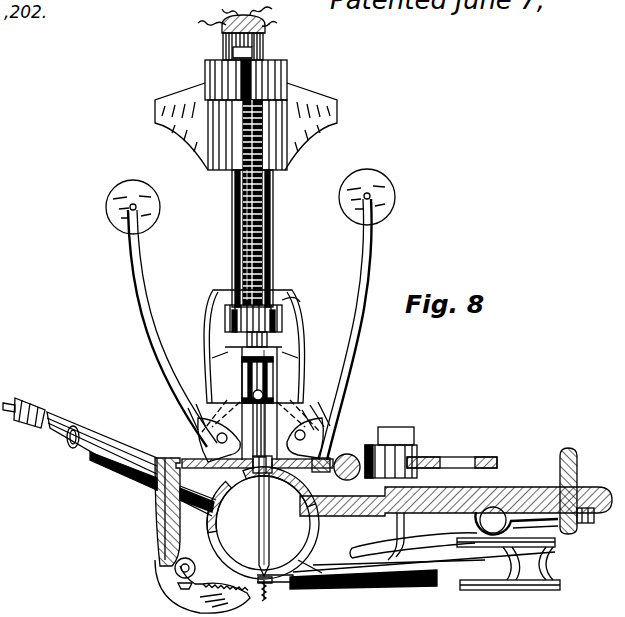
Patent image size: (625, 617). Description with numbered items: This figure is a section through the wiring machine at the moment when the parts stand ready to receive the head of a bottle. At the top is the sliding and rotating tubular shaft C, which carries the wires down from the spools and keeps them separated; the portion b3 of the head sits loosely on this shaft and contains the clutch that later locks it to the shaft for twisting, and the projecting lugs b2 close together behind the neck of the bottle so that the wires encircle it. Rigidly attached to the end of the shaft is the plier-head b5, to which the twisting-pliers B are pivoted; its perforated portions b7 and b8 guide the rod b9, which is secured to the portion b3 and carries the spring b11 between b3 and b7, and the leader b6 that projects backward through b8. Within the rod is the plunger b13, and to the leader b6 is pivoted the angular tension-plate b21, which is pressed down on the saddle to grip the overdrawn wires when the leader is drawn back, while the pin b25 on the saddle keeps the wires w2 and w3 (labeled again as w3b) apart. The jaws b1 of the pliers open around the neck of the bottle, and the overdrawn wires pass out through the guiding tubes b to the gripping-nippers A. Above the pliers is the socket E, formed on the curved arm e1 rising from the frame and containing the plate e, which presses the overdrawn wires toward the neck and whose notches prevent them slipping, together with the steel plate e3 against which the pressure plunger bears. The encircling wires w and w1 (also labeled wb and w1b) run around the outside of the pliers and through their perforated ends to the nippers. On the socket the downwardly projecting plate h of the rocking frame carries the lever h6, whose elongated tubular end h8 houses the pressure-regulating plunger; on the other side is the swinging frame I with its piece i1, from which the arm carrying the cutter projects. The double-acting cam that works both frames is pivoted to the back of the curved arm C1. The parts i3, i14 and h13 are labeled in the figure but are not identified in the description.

The encircling wire w is at (228, 16).
The overdrawn wire w3 is at (224, 7).
The encircling wire w1 is at (272, 25).
The tubular shaft C is at (265, 40).
The portion of the head b3 is at (232, 79).
The projecting lugs b2 is at (155, 104).
The spring b11 is at (232, 195).
The rod b9 is at (273, 222).
The curved arm C1 is at (236, 249).
The twisting-pliers B is at (360, 394).
The plier-head b5 is at (261, 375).
The perforated portion b7 is at (213, 318).
The perforated portion b8 is at (285, 290).
The plunger b13 is at (290, 337).
The tension-plate b21 is at (270, 377).
The pin b25 is at (265, 396).
The leader b6 is at (262, 424).
The guiding tubes b is at (259, 464).
The piece i1 is at (269, 432).
The base plate i14 is at (257, 469).
The knob i3 is at (348, 474).
The swinging frame I is at (468, 458).
The curved arm e1 is at (500, 500).
The gripping-nippers A is at (408, 562).
The socket E is at (263, 463).
The encircling wire w1b is at (323, 528).
The plate e is at (261, 500).
The steel plate e3 is at (254, 514).
The overdrawn wire w2 is at (248, 528).
The overdrawn wire w3b is at (289, 524).
The jaws b1 is at (296, 566).
The lever h6 is at (157, 518).
The ratchet h13 is at (235, 597).
The side plate of rocking frame h is at (189, 521).
The encircling wire wb is at (208, 539).
The elongated end h8 is at (80, 444).